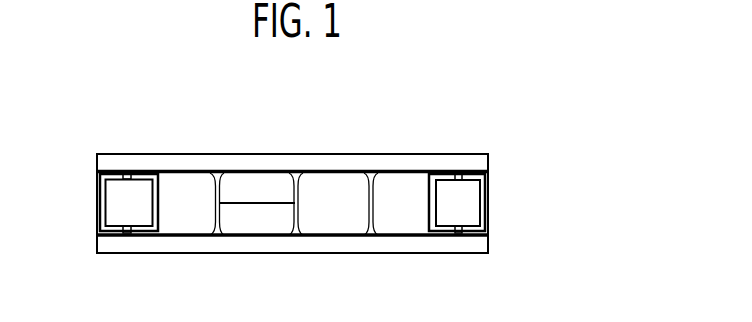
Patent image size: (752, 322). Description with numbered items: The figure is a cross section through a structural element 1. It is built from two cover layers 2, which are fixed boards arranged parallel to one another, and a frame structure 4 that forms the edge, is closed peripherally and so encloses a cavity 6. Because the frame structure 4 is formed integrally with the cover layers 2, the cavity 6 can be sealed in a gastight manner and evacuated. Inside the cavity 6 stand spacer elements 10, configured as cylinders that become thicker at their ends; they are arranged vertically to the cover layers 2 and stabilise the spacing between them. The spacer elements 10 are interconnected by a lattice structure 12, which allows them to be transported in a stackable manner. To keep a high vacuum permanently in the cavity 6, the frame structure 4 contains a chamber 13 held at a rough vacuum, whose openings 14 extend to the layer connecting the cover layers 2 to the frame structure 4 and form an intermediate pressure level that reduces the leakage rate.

The structural element 1 is at (211, 120).
The cover layers 2 is at (333, 153).
The frame structure 4 is at (97, 183).
The cavity 6 is at (402, 200).
The spacer elements 10 is at (217, 237).
The lattice structure 12 is at (257, 200).
The chamber 13 is at (120, 218).
The openings 14 is at (125, 172).